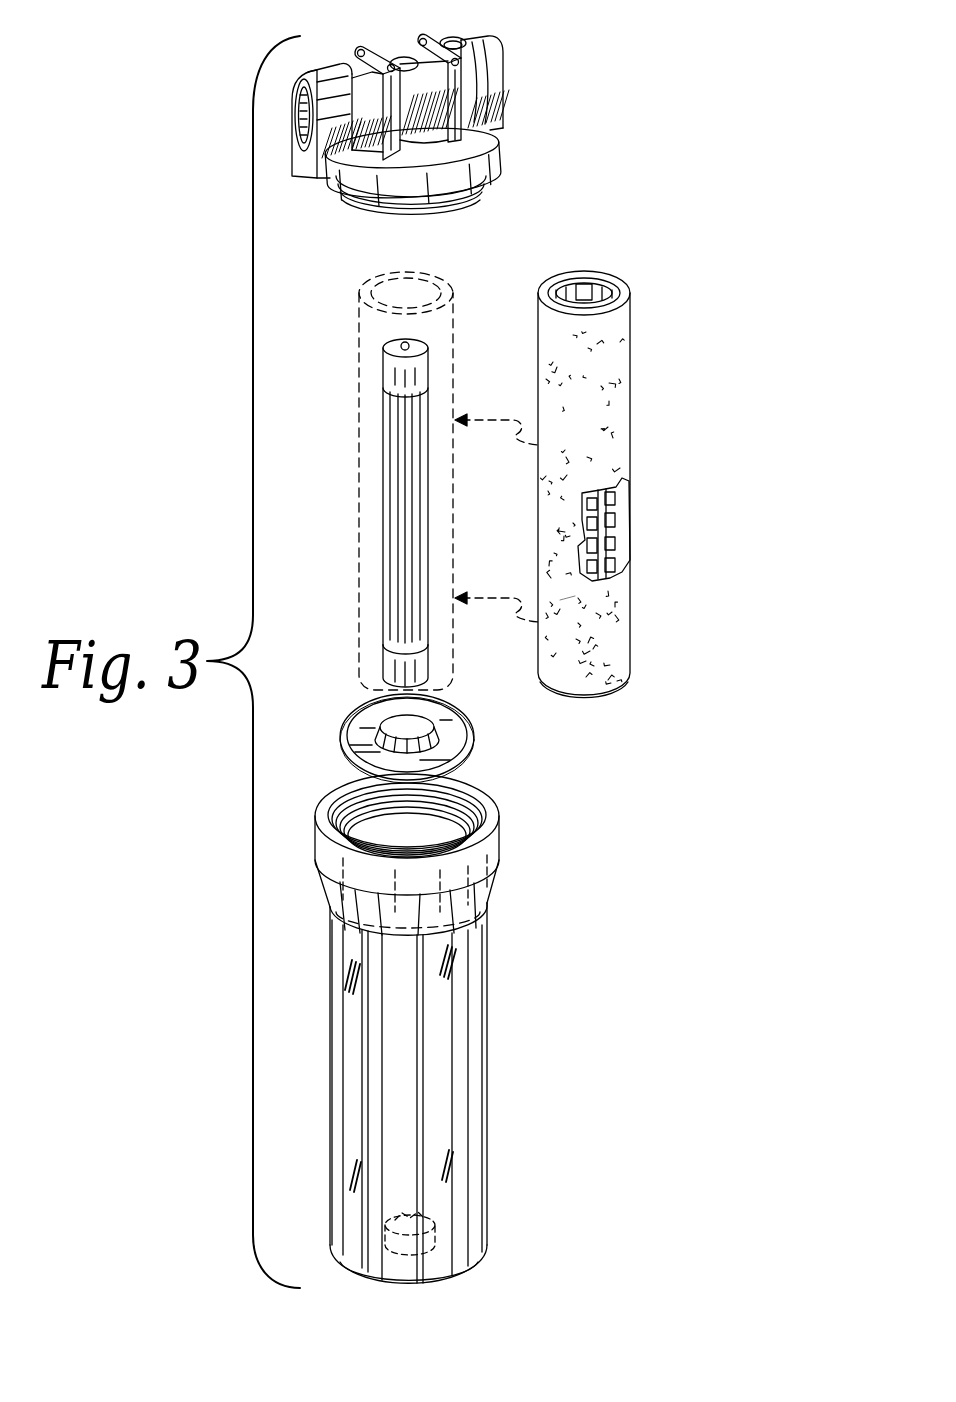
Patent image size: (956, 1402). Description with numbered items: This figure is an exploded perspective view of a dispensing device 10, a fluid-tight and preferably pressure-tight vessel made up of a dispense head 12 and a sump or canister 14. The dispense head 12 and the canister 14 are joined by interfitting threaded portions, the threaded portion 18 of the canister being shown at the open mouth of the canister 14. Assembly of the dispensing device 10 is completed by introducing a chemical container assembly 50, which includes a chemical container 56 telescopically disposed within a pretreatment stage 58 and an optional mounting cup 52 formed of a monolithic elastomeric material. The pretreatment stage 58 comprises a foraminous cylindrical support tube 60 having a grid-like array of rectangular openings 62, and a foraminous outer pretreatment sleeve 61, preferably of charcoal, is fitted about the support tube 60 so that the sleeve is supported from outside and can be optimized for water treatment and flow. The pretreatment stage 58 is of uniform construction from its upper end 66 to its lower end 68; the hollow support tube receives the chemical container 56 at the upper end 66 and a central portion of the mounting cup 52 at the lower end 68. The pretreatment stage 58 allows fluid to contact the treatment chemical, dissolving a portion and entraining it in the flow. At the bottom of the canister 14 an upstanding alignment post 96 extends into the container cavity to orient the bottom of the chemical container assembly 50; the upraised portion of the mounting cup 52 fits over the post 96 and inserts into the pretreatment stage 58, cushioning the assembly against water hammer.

The dispensing device 10 is at (688, 50).
The dispense head 12 is at (508, 58).
The canister 14 is at (488, 1073).
The threaded portion 18 is at (463, 806).
The chemical container assembly 50 is at (503, 274).
The mounting cup 52 is at (473, 731).
The chemical container 56 is at (418, 513).
The pretreatment stage 58 is at (630, 641).
The support tube 60 is at (600, 548).
The outer pretreatment sleeve 61 is at (617, 612).
The rectangular openings 62 is at (598, 502).
The upper end 66 is at (630, 291).
The lower end 68 is at (630, 680).
The alignment post 96 is at (430, 1225).